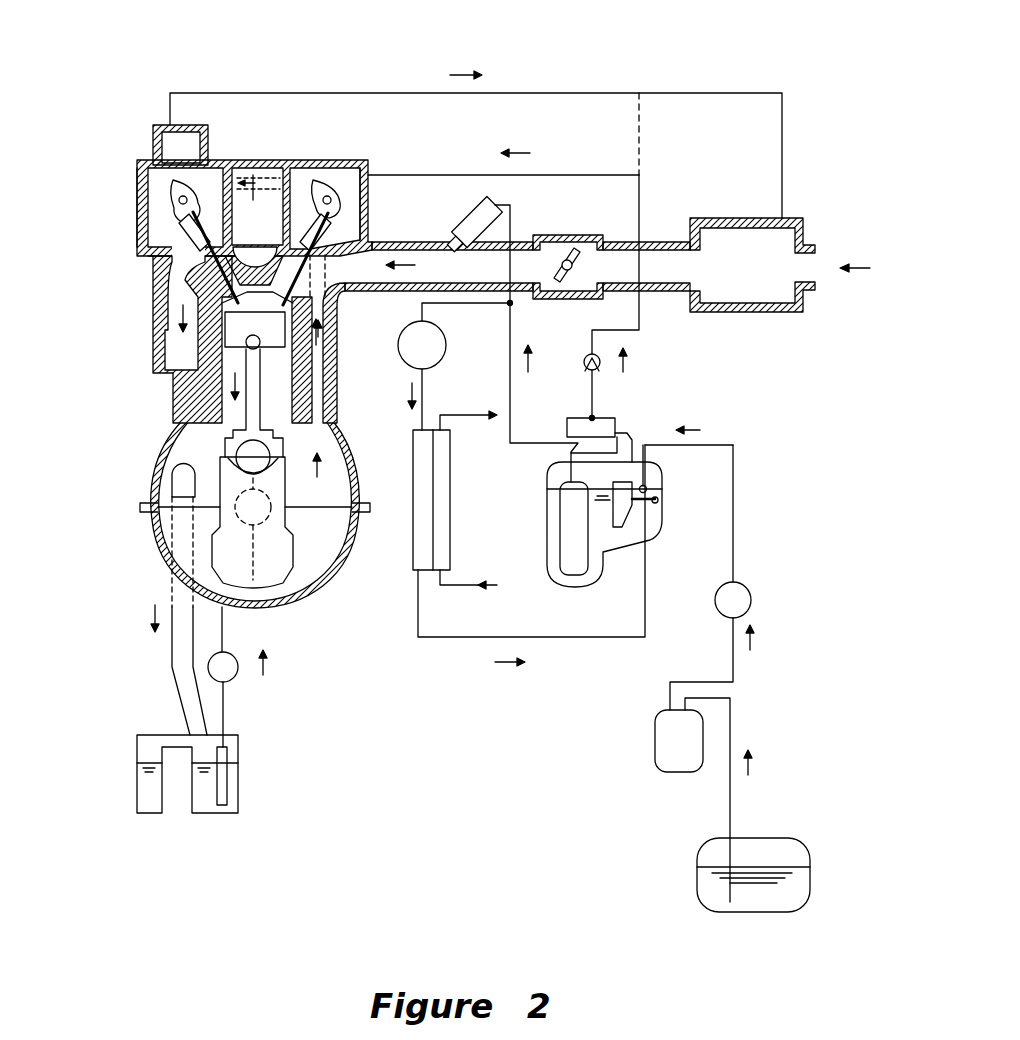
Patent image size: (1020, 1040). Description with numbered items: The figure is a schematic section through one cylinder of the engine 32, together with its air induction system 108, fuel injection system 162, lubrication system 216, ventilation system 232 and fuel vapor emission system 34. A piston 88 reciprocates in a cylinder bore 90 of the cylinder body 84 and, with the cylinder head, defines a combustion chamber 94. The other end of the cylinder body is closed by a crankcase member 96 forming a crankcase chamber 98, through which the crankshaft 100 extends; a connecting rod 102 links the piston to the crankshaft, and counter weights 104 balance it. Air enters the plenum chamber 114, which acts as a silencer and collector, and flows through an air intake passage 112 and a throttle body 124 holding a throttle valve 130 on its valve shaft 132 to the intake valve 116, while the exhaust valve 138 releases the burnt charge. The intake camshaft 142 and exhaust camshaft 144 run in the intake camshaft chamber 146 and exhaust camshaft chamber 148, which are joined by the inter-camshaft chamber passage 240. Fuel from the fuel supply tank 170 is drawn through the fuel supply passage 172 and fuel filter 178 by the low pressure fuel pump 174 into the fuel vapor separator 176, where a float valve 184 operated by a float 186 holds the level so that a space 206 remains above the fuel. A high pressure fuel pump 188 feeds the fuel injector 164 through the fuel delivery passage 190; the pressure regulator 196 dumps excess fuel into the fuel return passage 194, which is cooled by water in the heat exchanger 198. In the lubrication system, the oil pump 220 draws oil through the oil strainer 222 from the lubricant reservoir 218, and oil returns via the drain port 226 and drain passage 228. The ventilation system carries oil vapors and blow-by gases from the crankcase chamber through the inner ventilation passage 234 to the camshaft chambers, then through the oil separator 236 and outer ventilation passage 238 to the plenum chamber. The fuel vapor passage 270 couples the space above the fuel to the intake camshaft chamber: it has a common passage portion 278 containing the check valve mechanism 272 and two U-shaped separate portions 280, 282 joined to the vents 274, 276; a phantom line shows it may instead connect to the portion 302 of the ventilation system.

The engine 32 is at (155, 88).
The fuel vapor emission system 34 is at (670, 184).
The cylinder body 84 is at (163, 455).
The piston 88 is at (273, 330).
The cylinder bore 90 is at (220, 385).
The combustion chamber 94 is at (160, 300).
The crankcase member 96 is at (310, 563).
The crankcase chamber 98 is at (300, 578).
The crankshaft 100 is at (257, 455).
The connecting rod 102 is at (260, 393).
The counter weight 104 is at (267, 596).
The air induction system 108 is at (812, 210).
The air intake passage 112 is at (672, 252).
The plenum chamber 114 is at (758, 236).
The intake valve 116 is at (270, 195).
The throttle body 124 is at (567, 238).
The throttle valve 130 is at (603, 262).
The valve shaft 132 is at (560, 258).
The exhaust valve 138 is at (158, 262).
The intake camshaft 142 is at (322, 193).
The exhaust camshaft 144 is at (178, 200).
The intake camshaft chamber 146 is at (363, 155).
The exhaust camshaft chamber 148 is at (157, 225).
The fuel injection system 162 is at (803, 571).
The fuel injector 164 is at (477, 208).
The fuel supply tank 170 is at (768, 845).
The fuel supply passage 172 is at (735, 530).
The low pressure fuel pump 174 is at (752, 604).
The fuel vapor separator 176 is at (623, 553).
The fuel filter 178 is at (665, 743).
The float valve 184 is at (660, 492).
The float 186 is at (628, 518).
The high pressure fuel pump 188 is at (567, 543).
The fuel delivery passage 190 is at (510, 330).
The fuel return passage 194 is at (465, 640).
The pressure regulator 196 is at (448, 336).
The heat exchanger 198 is at (413, 505).
The space 206 is at (553, 478).
The lubrication system 216 is at (160, 668).
The lubricant reservoir 218 is at (143, 793).
The oil pump 220 is at (235, 677).
The oil strainer 222 is at (224, 783).
The drain port 226 is at (180, 478).
The drain passage 228 is at (178, 597).
The ventilation system 232 is at (355, 84).
The inner ventilation passage 234 is at (318, 375).
The oil separator 236 is at (178, 155).
The outer ventilation passage 238 is at (548, 92).
The inter-camshaft chamber passage 240 is at (253, 175).
The fuel vapor passage 270 is at (605, 172).
The check valve mechanism 272 is at (585, 372).
The vent 274 is at (560, 464).
The vent 276 is at (650, 463).
The common passage portion 278 is at (596, 385).
The separate portion 280 is at (613, 425).
The separate portion 282 is at (567, 425).
The portion of the ventilation system 302 is at (648, 92).